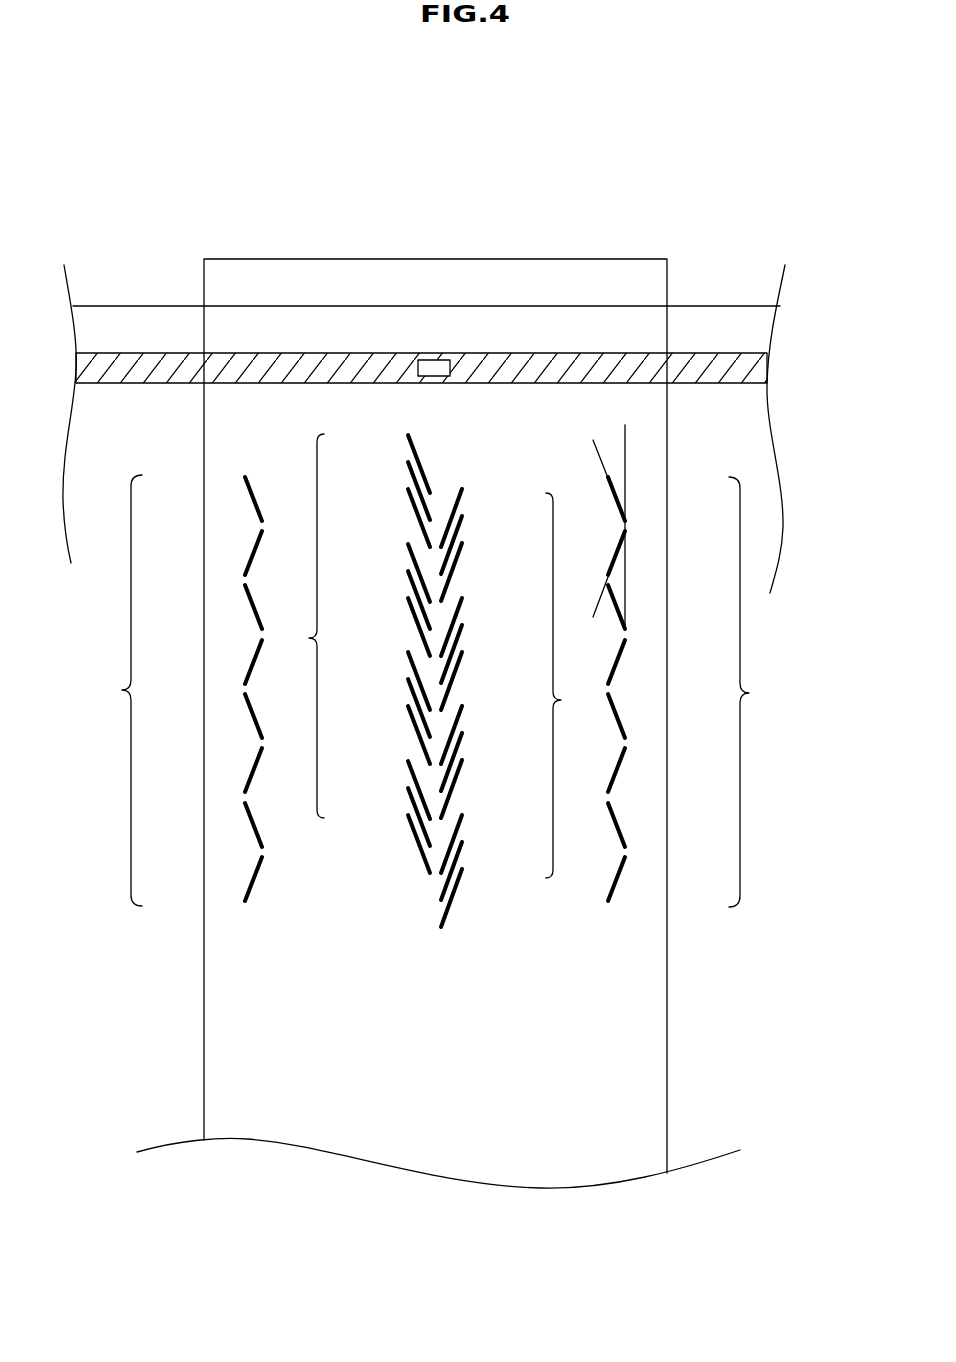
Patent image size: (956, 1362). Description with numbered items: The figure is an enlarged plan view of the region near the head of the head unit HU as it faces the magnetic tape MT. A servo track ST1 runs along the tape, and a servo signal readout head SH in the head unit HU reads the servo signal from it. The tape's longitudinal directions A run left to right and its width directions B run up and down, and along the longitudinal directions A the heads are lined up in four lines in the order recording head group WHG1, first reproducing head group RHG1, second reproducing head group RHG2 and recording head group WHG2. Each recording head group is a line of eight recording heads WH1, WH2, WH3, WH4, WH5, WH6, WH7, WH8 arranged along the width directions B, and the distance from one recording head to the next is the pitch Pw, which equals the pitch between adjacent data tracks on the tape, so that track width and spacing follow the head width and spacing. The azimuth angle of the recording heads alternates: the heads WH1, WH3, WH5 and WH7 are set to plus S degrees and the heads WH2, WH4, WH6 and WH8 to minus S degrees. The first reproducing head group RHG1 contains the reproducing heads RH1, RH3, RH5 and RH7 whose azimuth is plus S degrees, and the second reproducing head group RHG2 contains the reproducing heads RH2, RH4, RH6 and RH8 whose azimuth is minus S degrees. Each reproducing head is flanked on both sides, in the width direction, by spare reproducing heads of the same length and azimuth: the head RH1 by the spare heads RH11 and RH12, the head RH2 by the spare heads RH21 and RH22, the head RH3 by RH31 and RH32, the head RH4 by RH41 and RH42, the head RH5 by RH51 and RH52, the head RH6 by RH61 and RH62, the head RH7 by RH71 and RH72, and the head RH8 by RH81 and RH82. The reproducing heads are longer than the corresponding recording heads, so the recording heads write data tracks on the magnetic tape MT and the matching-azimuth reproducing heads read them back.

The head unit HU is at (450, 255).
The magnetic tape MT is at (737, 293).
The servo track ST1 is at (135, 370).
The servo signal readout head SH is at (446, 360).
The longitudinal directions A is at (370, 205).
The width directions B is at (185, 940).
The pitch Pw is at (303, 532).
The recording head group WHG1 is at (98, 690).
The recording head group WHG2 is at (771, 692).
The recording head WH1 is at (250, 496).
The recording head WH2 is at (250, 550).
The recording head WH3 is at (250, 605).
The recording head WH4 is at (250, 659).
The recording head WH5 is at (250, 714).
The recording head WH6 is at (250, 768).
The recording head WH7 is at (250, 822).
The recording head WH8 is at (250, 877).
The first reproducing head group RHG1 is at (309, 638).
The second reproducing head group RHG2 is at (561, 700).
The reproducing head RH1 is at (408, 463).
The spare reproducing head RH11 is at (408, 436).
The spare reproducing head RH12 is at (408, 490).
The reproducing head RH2 is at (462, 519).
The spare reproducing head RH21 is at (462, 492).
The spare reproducing head RH22 is at (462, 546).
The reproducing head RH3 is at (408, 572).
The spare reproducing head RH31 is at (408, 545).
The spare reproducing head RH32 is at (408, 599).
The reproducing head RH4 is at (462, 628).
The spare reproducing head RH41 is at (462, 601).
The spare reproducing head RH42 is at (462, 655).
The reproducing head RH5 is at (408, 680).
The spare reproducing head RH51 is at (408, 653).
The spare reproducing head RH52 is at (408, 707).
The reproducing head RH6 is at (462, 736).
The spare reproducing head RH61 is at (462, 709).
The spare reproducing head RH62 is at (462, 763).
The reproducing head RH7 is at (408, 789).
The spare reproducing head RH71 is at (408, 762).
The spare reproducing head RH72 is at (408, 816).
The reproducing head RH8 is at (462, 845).
The spare reproducing head RH81 is at (462, 818).
The spare reproducing head RH82 is at (462, 872).